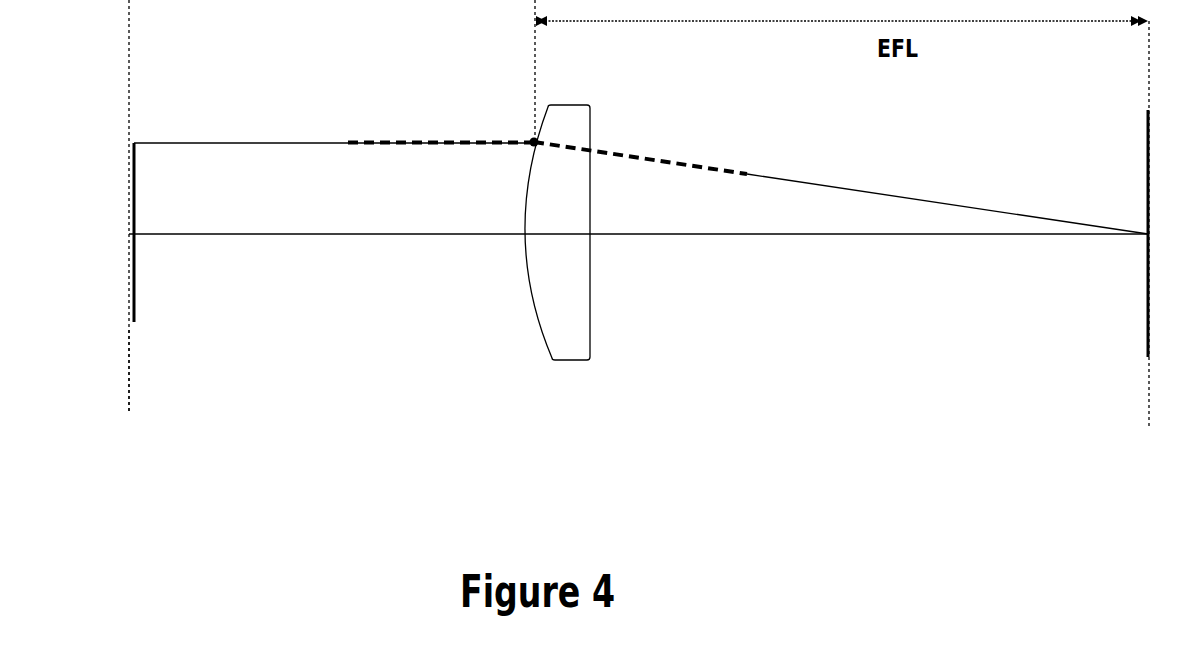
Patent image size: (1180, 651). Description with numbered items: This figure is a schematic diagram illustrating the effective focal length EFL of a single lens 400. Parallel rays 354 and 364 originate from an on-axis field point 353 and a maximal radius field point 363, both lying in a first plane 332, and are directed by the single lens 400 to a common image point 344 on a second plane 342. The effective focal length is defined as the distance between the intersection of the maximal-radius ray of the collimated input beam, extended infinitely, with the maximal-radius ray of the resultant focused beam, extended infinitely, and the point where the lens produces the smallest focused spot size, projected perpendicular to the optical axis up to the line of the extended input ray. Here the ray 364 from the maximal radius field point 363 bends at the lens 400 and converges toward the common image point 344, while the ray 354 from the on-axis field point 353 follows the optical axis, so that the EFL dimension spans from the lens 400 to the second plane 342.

The first plane 332 is at (131, 418).
The second plane 342 is at (1152, 428).
The common image point 344 is at (1147, 236).
The on-axis field point 353 is at (128, 233).
The parallel ray 354 is at (333, 234).
The maximal radius field point 363 is at (129, 143).
The parallel ray 364 is at (257, 150).
The single lens 400 is at (519, 358).